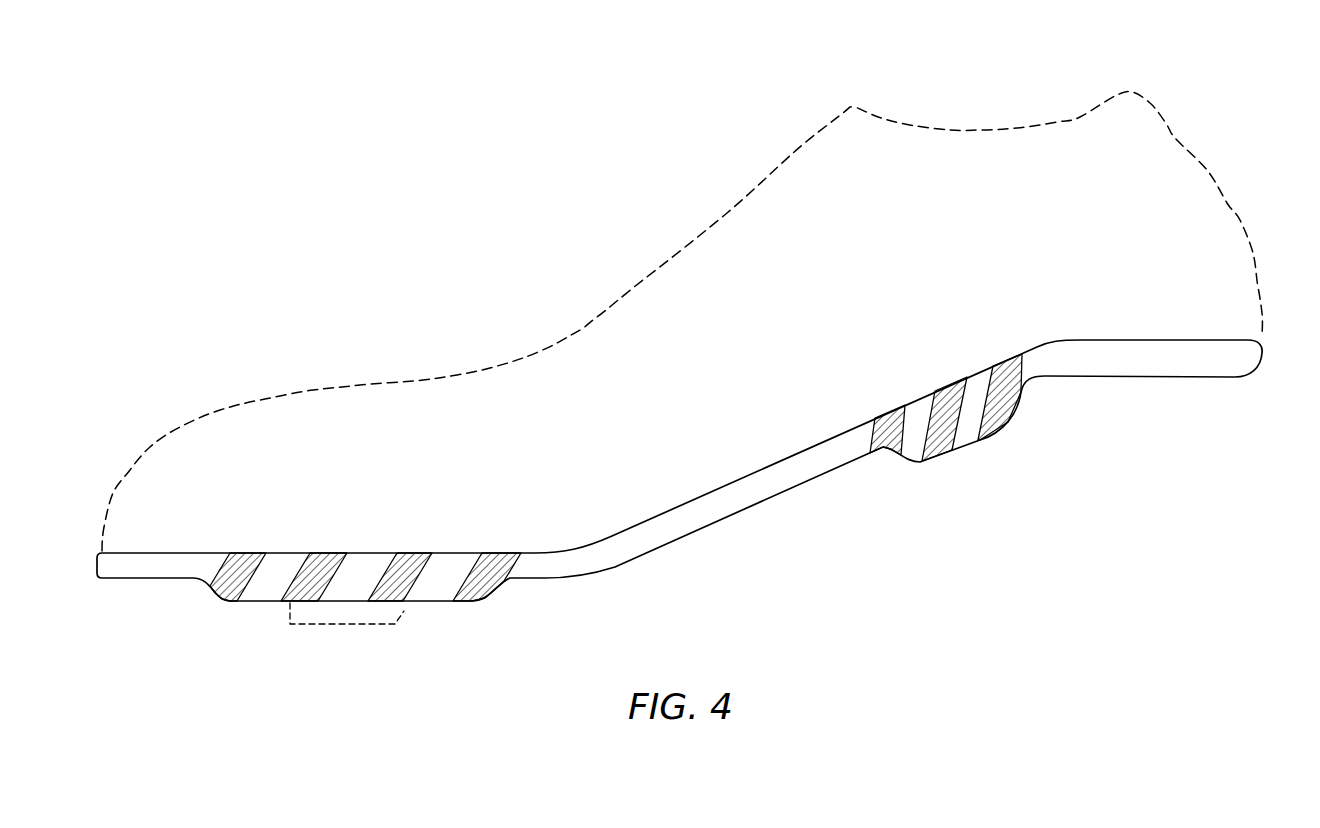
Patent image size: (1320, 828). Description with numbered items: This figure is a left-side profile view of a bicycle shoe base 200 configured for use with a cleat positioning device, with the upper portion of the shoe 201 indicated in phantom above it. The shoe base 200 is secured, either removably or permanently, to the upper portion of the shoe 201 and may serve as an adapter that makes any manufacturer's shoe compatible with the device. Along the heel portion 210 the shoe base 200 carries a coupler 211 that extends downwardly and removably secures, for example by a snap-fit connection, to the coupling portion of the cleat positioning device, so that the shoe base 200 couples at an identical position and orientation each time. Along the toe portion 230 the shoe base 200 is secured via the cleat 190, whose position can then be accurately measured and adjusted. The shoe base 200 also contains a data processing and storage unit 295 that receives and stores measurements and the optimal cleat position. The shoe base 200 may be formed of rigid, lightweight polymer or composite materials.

The cleat 190 is at (287, 612).
The shoe base 200 is at (705, 511).
The shoe 201 is at (1218, 183).
The heel portion 210 is at (955, 459).
The coupler 211 is at (960, 437).
The toe portion 230 is at (365, 622).
The data processing and storage unit 295 is at (422, 590).